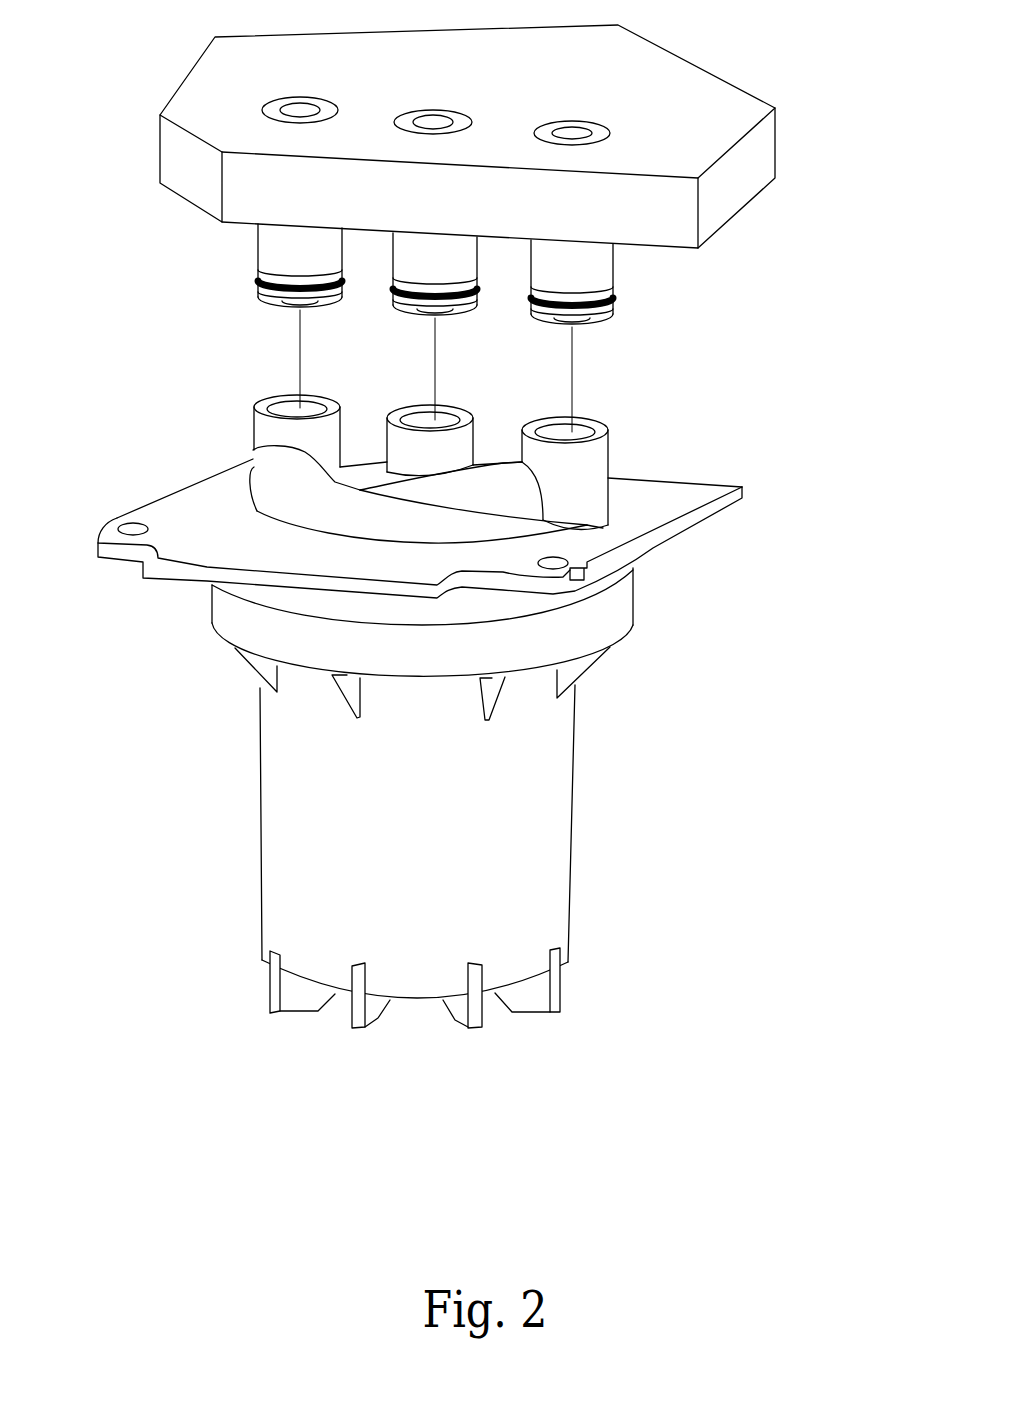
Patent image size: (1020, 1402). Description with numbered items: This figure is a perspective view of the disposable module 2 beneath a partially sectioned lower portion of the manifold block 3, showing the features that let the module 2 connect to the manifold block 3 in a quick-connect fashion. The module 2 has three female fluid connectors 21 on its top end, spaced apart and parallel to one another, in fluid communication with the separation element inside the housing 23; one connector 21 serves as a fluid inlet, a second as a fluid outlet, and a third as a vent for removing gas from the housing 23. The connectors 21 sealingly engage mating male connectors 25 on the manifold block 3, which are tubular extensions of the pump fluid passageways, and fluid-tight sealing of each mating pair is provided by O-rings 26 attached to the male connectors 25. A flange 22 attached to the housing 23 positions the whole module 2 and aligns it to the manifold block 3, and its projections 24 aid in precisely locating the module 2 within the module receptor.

The module 2 is at (196, 735).
The manifold block 3 is at (752, 150).
The female fluid connectors 21 is at (320, 390).
The flange 22 is at (745, 498).
The housing 23 is at (553, 786).
The projections 24 is at (117, 518).
The male connectors 25 is at (257, 257).
The O-rings 26 is at (252, 280).